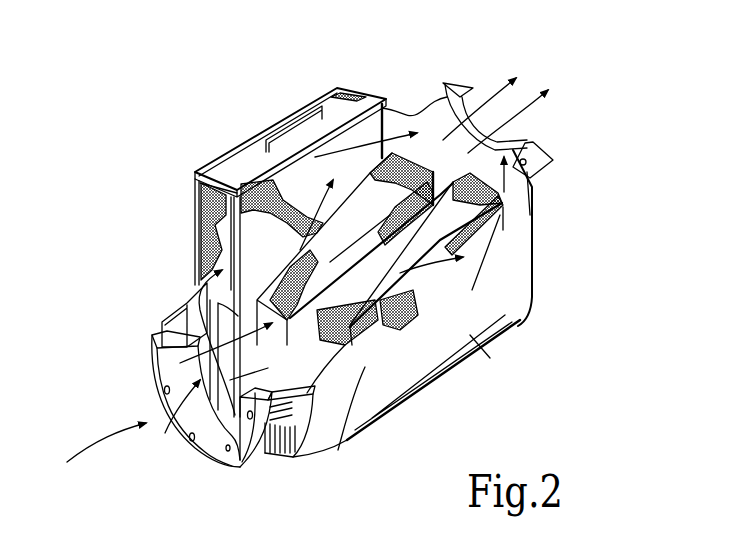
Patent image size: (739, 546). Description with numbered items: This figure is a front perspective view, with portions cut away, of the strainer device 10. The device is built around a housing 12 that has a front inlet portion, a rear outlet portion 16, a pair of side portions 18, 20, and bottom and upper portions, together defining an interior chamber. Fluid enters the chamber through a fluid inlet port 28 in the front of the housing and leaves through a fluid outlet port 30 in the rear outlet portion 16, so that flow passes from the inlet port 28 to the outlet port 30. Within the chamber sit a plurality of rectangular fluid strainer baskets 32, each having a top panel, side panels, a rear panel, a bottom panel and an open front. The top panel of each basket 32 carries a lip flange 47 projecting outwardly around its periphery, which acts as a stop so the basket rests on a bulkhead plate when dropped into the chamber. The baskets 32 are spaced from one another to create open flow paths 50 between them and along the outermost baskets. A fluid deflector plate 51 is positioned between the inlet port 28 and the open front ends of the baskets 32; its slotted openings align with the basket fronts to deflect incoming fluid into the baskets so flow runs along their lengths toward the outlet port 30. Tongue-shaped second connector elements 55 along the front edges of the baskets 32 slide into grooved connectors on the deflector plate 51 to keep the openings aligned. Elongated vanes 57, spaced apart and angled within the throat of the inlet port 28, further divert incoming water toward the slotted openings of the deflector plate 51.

The strainer device 10 is at (413, 96).
The housing 12 is at (427, 380).
The rear outlet portion 16 is at (533, 225).
The side portion 18 is at (163, 318).
The side portion 20 is at (488, 347).
The fluid inlet port 28 is at (205, 443).
The fluid outlet port 30 is at (530, 145).
The fluid strainer basket 32 is at (248, 160).
The lip flange 47 is at (337, 92).
The open flow path 50 is at (345, 270).
The fluid deflector plate 51 is at (303, 403).
The second connector element 55 is at (237, 187).
The elongated vane 57 is at (235, 415).